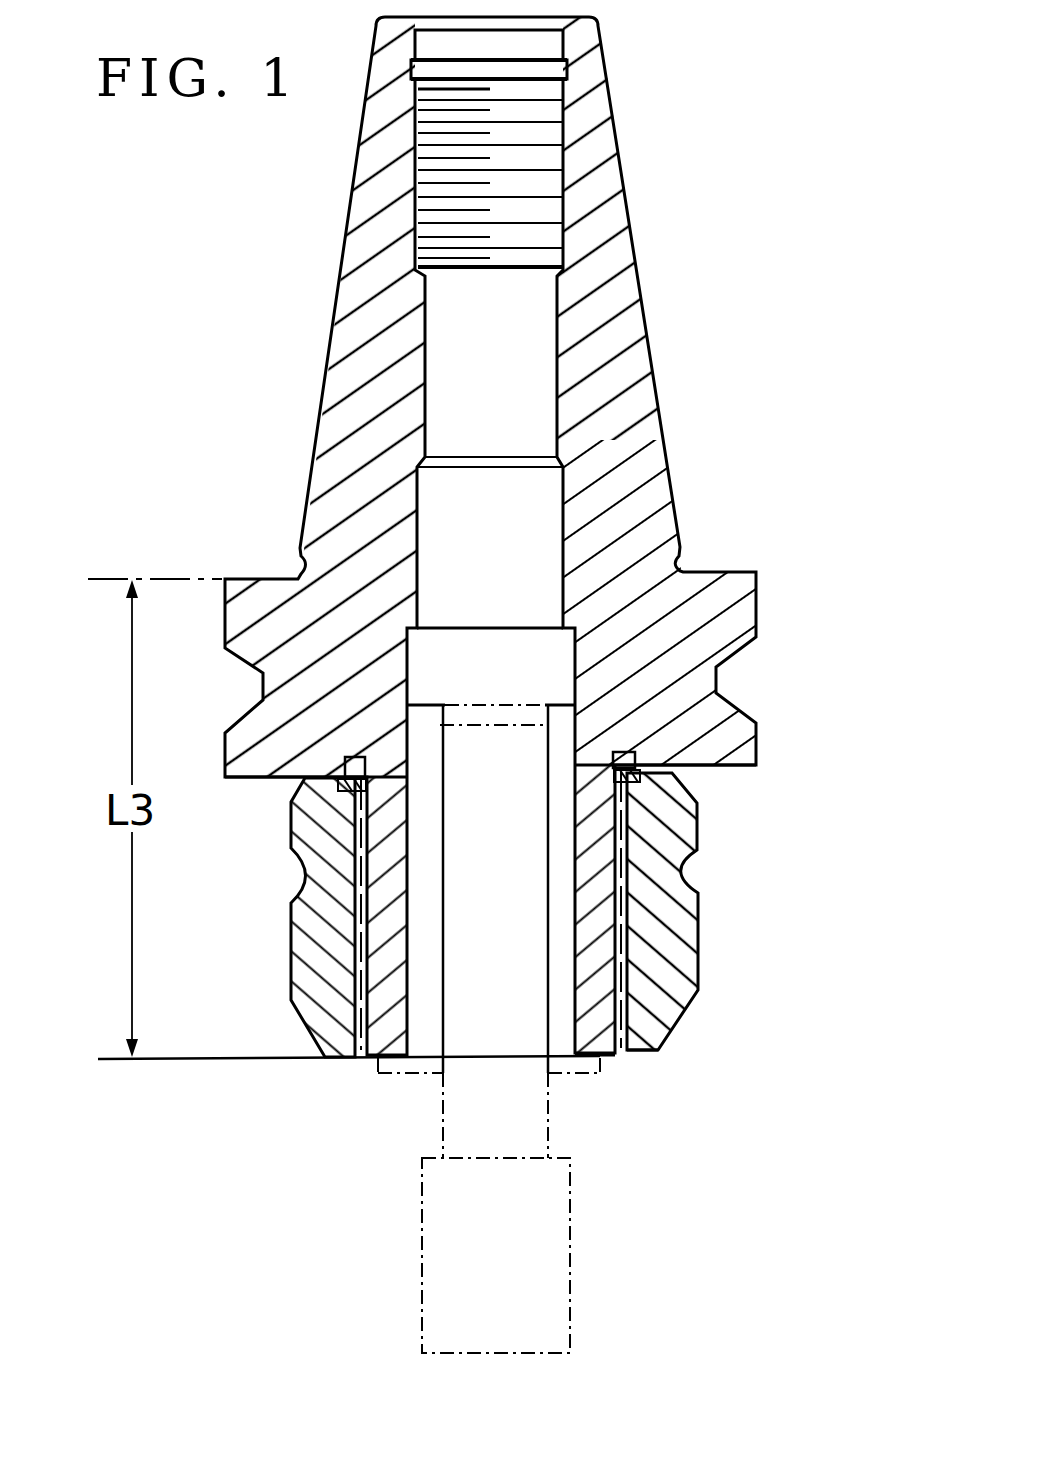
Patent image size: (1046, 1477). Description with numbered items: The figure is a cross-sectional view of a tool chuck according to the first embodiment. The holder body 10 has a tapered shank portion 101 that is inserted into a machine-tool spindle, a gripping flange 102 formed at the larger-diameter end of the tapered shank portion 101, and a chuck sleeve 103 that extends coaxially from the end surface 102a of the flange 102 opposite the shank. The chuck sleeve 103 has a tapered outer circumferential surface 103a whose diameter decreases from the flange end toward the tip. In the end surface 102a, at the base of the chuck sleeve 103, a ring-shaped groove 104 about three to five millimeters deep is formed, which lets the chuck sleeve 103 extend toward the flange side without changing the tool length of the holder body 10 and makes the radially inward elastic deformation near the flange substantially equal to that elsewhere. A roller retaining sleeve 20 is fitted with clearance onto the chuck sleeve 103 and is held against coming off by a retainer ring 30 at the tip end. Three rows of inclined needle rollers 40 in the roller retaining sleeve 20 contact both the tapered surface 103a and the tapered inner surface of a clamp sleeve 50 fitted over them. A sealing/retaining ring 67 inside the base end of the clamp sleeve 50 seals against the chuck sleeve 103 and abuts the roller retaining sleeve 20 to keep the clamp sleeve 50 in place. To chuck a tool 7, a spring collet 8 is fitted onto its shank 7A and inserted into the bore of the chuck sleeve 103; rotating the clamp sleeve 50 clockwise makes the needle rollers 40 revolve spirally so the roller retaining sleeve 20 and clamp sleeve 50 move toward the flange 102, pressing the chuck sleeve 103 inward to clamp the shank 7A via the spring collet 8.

The holder body 10 is at (632, 213).
The tapered shank portion 101 is at (655, 384).
The gripping flange 102 is at (744, 567).
The end surface 102a is at (262, 783).
The chuck sleeve 103 is at (697, 913).
The tapered outer circumferential surface 103a is at (597, 967).
The groove 104 is at (622, 752).
The sealing/retaining ring 67 is at (638, 782).
The needle rollers 40 is at (680, 828).
The roller retaining sleeve 20 is at (672, 858).
The clamp sleeve 50 is at (677, 972).
The retainer ring 30 is at (618, 1060).
The spring collet 8 is at (387, 1073).
The shank 7A is at (537, 1118).
The tool 7 is at (547, 1273).